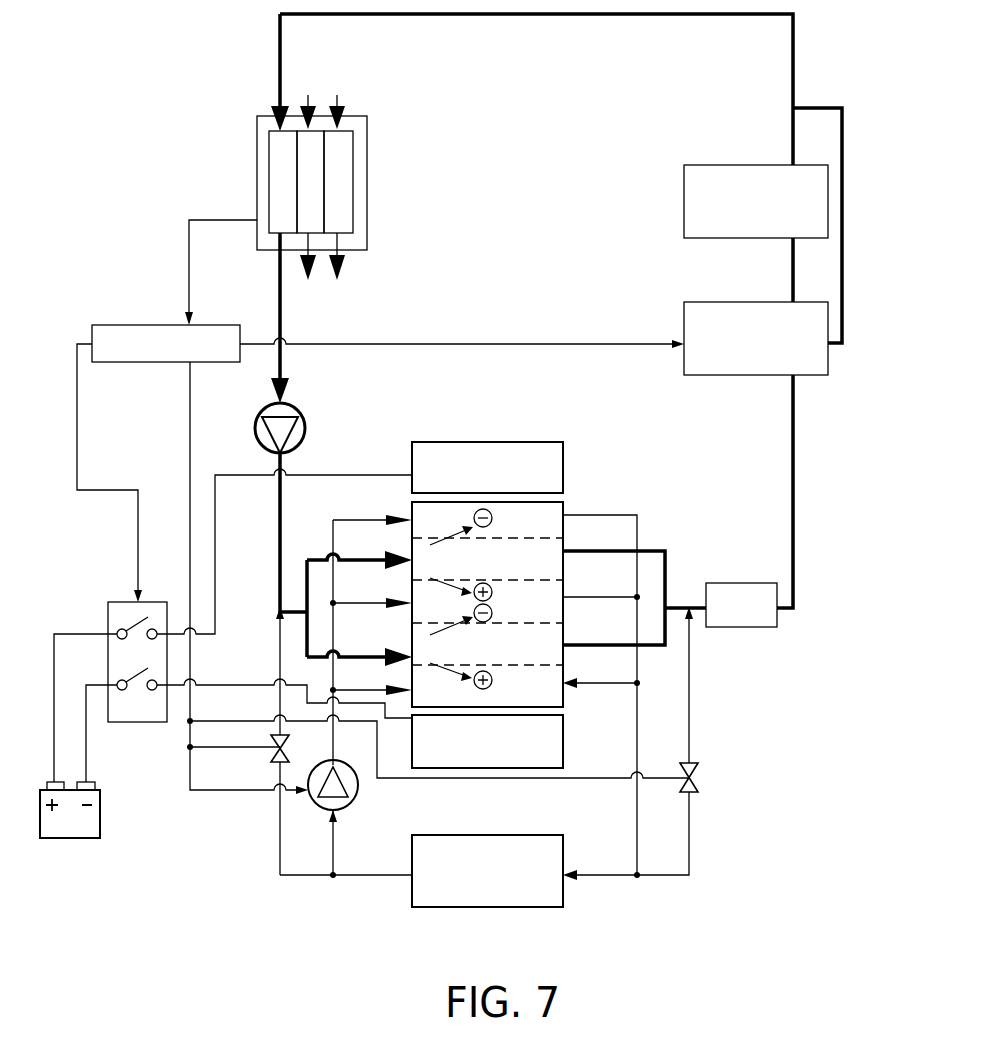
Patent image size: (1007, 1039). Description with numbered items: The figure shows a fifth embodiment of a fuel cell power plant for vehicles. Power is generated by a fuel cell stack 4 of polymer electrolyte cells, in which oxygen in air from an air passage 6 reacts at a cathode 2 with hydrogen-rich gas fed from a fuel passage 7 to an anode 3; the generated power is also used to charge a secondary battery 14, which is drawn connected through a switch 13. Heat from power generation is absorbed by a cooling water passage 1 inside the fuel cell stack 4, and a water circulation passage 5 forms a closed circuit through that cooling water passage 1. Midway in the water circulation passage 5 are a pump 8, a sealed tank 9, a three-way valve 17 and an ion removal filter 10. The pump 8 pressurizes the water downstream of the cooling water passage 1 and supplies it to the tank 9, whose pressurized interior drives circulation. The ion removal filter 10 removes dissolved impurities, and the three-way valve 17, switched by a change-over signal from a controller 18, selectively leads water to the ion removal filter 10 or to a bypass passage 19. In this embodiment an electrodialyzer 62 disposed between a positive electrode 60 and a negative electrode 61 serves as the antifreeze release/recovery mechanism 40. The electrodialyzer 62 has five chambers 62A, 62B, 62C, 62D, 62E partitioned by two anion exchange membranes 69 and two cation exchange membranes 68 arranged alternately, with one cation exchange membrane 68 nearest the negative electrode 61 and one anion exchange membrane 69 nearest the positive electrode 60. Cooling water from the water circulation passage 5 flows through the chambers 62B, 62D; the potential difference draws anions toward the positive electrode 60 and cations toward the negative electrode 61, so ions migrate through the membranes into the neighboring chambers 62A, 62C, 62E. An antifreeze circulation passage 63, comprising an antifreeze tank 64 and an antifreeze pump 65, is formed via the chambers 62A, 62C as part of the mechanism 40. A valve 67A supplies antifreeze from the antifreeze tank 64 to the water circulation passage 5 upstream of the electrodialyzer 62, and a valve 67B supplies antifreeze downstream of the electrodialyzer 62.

The cooling water passage 1 is at (276, 179).
The cathode 2 is at (313, 157).
The anode 3 is at (345, 213).
The fuel cell stack 4 is at (367, 186).
The water circulation passage 5 is at (797, 40).
The air passage 6 is at (308, 171).
The fuel passage 7 is at (337, 171).
The pump 8 is at (306, 428).
The tank 9 is at (762, 583).
The ion removal filter 10 is at (703, 165).
The switch 13 is at (115, 602).
The secondary battery 14 is at (100, 805).
The three-way valve 17 is at (703, 302).
The controller 18 is at (212, 325).
The bypass passage 19 is at (805, 108).
The antifreeze release/recovery mechanism 40 is at (583, 432).
The positive electrode 60 is at (565, 470).
The negative electrode 61 is at (565, 740).
The electrodialyzer 62 is at (565, 504).
The chamber 62A is at (565, 523).
The chamber 62B is at (565, 565).
The chamber 62C is at (565, 608).
The chamber 62D is at (565, 650).
The chamber 62E is at (565, 693).
The antifreeze circulation passage 63 is at (366, 878).
The antifreeze tank 64 is at (525, 835).
The antifreeze pump 65 is at (359, 788).
The valve 67A is at (273, 757).
The valve 67B is at (696, 783).
The cation exchange membrane 68 is at (503, 580).
The anion exchange membrane 69 is at (503, 538).